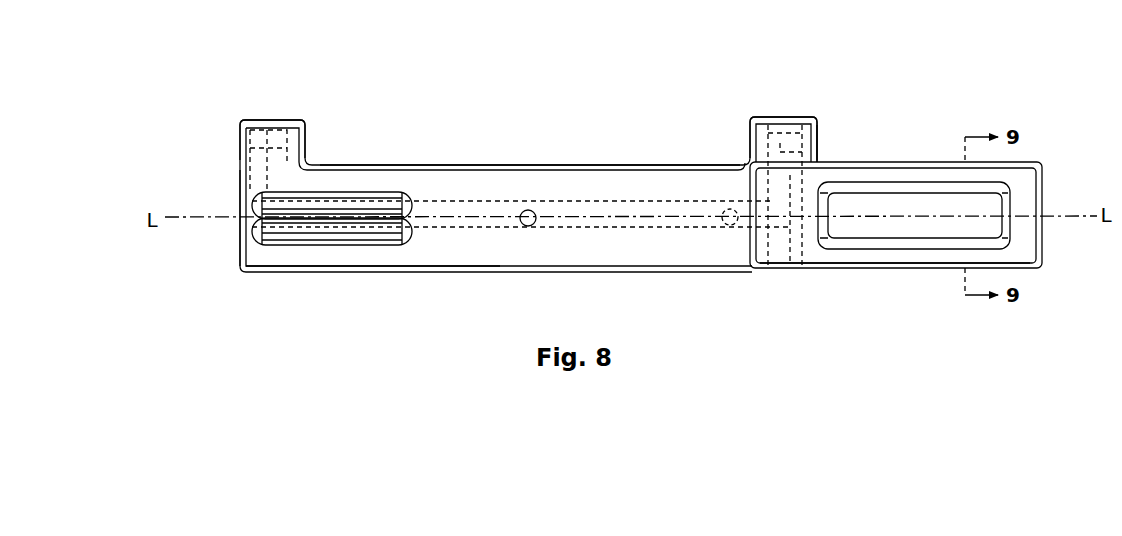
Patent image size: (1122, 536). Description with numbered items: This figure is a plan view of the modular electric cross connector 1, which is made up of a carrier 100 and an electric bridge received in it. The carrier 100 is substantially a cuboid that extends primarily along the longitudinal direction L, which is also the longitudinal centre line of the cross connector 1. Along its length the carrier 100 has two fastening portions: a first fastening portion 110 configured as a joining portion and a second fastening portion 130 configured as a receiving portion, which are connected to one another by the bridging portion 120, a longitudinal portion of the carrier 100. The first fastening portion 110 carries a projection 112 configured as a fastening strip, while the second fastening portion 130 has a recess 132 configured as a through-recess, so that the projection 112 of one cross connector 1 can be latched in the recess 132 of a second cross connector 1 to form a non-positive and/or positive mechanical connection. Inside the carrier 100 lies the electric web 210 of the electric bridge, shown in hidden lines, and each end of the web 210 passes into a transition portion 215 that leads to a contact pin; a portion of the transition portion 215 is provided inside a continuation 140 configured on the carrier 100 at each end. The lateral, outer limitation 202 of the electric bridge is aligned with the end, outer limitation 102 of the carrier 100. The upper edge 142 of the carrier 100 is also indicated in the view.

The modular electric cross connector 1 is at (230, 58).
The carrier 100 is at (639, 160).
The end, outer limitation 102 is at (240, 250).
The first fastening portion 110 is at (327, 258).
The projection 112 is at (333, 200).
The bridging portion 120 is at (545, 253).
The second fastening portion 130 is at (897, 258).
The recess 132 is at (937, 203).
The continuation 140 is at (268, 130).
The upper edge 142 is at (502, 165).
The lateral, outer limitation 202 is at (240, 143).
The electric web 210 is at (583, 215).
The transition portion 215 is at (287, 184).